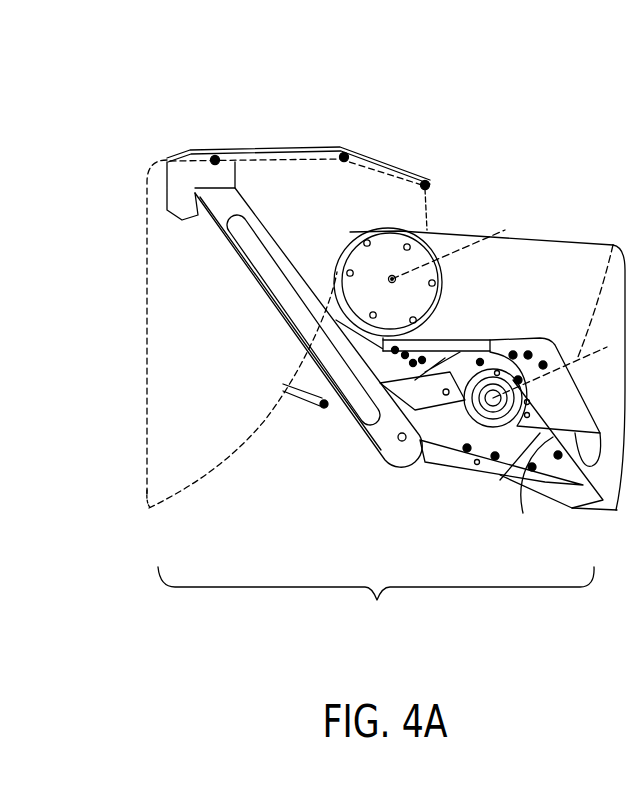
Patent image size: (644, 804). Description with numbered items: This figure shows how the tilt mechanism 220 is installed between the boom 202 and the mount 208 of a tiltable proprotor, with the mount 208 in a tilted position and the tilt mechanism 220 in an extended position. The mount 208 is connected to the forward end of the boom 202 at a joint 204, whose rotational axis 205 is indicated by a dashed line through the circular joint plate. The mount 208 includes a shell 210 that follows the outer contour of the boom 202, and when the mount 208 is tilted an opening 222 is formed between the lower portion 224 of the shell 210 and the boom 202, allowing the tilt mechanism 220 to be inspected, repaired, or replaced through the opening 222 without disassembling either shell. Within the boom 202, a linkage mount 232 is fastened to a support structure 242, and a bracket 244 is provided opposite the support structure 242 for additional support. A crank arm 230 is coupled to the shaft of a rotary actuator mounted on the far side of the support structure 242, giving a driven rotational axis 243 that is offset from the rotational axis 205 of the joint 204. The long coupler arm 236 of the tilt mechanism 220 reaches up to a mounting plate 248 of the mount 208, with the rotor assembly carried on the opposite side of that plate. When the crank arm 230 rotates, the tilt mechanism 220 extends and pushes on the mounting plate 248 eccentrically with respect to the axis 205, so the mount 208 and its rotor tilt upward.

The boom 202 is at (527, 238).
The joint 204 is at (418, 256).
The rotational axis 205 is at (474, 238).
The mount 208 is at (367, 159).
The shell 210 is at (242, 460).
The tilt mechanism 220 is at (345, 494).
The opening 222 is at (376, 606).
The lower portion 224 is at (138, 497).
The crank arm 230 is at (424, 452).
The linkage mount 232 is at (461, 464).
The coupler arm 236 is at (343, 407).
The support structure 242 is at (498, 478).
The driven rotational axis 243 is at (615, 243).
The bracket 244 is at (550, 460).
The mounting plate 248 is at (291, 146).